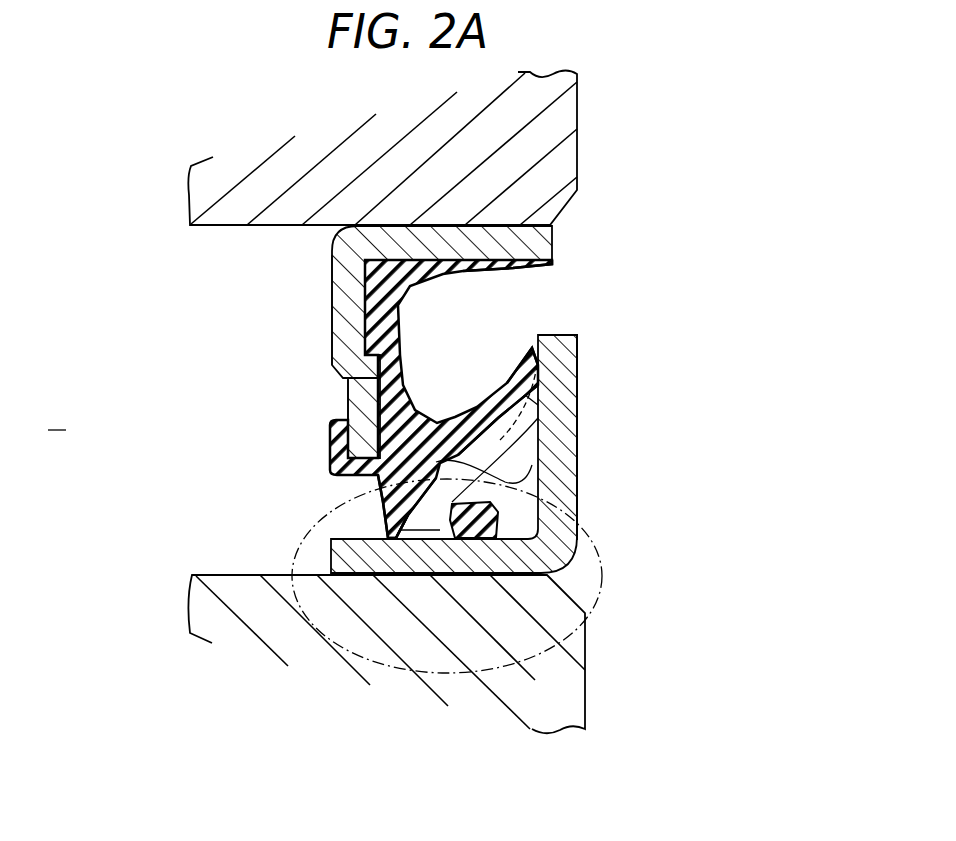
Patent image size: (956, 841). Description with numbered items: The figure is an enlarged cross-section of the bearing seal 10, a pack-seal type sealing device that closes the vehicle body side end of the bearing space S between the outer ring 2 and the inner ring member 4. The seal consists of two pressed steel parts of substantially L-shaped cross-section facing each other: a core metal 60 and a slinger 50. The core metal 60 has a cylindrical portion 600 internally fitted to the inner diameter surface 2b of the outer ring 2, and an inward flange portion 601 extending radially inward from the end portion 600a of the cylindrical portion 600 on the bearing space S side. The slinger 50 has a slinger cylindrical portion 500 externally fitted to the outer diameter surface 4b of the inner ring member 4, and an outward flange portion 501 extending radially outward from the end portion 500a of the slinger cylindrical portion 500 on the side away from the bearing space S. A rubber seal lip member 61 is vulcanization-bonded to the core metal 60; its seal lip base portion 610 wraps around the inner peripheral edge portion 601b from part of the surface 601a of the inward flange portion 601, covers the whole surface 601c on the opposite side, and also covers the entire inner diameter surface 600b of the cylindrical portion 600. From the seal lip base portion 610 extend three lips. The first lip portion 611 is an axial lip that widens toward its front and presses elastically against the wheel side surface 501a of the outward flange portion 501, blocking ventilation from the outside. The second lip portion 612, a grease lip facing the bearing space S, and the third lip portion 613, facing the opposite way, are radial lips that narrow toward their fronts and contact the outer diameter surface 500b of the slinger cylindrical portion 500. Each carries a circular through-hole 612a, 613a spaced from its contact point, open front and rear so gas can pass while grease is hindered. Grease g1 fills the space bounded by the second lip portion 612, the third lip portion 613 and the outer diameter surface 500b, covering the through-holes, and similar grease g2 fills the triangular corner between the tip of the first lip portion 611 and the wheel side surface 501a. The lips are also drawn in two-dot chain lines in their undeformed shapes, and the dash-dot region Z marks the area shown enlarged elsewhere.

The outer ring 2 is at (562, 106).
The inner diameter surface 2b is at (193, 226).
The inner ring member 4 is at (587, 686).
The outer diameter surface 4b is at (212, 568).
The bearing seal 10 is at (475, 489).
The slinger 50 is at (579, 543).
The slinger cylindrical portion 500 is at (587, 615).
The end portion of the slinger cylindrical portion 500a is at (562, 556).
The outer diameter surface of the slinger cylindrical portion 500b is at (405, 540).
The outward flange portion 501 is at (578, 447).
The wheel side surface 501a is at (580, 478).
The core metal 60 is at (337, 359).
The cylindrical portion 600 is at (333, 228).
The end portion of the cylindrical portion 600a is at (337, 266).
The inner diameter surface of the cylindrical portion 600b is at (462, 268).
The inward flange portion 601 is at (330, 347).
The surface of the inward flange portion on the bearing space side 601a is at (333, 446).
The inner peripheral edge portion 601b is at (333, 477).
The surface of the inward flange portion opposite the bearing space 601c is at (345, 376).
The seal lip member 61 is at (410, 356).
The seal lip base portion 610 is at (348, 400).
The first lip portion 611 is at (532, 348).
The second lip portion 612 is at (370, 505).
The through-hole 612a is at (380, 510).
The third lip portion 613 is at (450, 538).
The through-hole 613a is at (522, 466).
The grease g1 is at (390, 513).
The grease g2 is at (541, 408).
The portion Z is at (590, 545).
The bearing space S is at (57, 417).